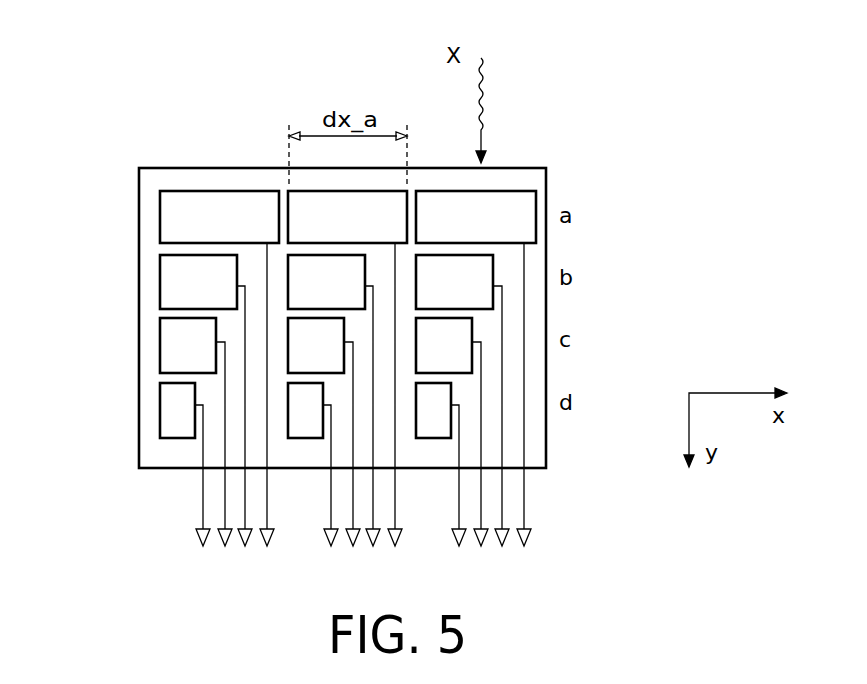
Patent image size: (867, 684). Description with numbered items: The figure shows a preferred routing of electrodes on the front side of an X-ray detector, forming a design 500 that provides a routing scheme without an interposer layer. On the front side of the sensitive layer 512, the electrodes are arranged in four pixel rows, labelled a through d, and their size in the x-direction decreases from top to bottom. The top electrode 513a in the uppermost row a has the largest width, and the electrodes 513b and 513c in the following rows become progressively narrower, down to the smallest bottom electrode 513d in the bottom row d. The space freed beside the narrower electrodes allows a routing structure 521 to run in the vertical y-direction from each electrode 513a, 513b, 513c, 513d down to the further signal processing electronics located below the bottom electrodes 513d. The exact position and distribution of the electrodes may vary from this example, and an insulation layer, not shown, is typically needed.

The design 500 is at (558, 93).
The sensitive layer 512 is at (224, 175).
The top electrode 513a is at (168, 220).
The electrode 513b is at (168, 284).
The electrode 513c is at (168, 345).
The bottom electrode 513d is at (168, 410).
The routing structure 521 is at (203, 505).